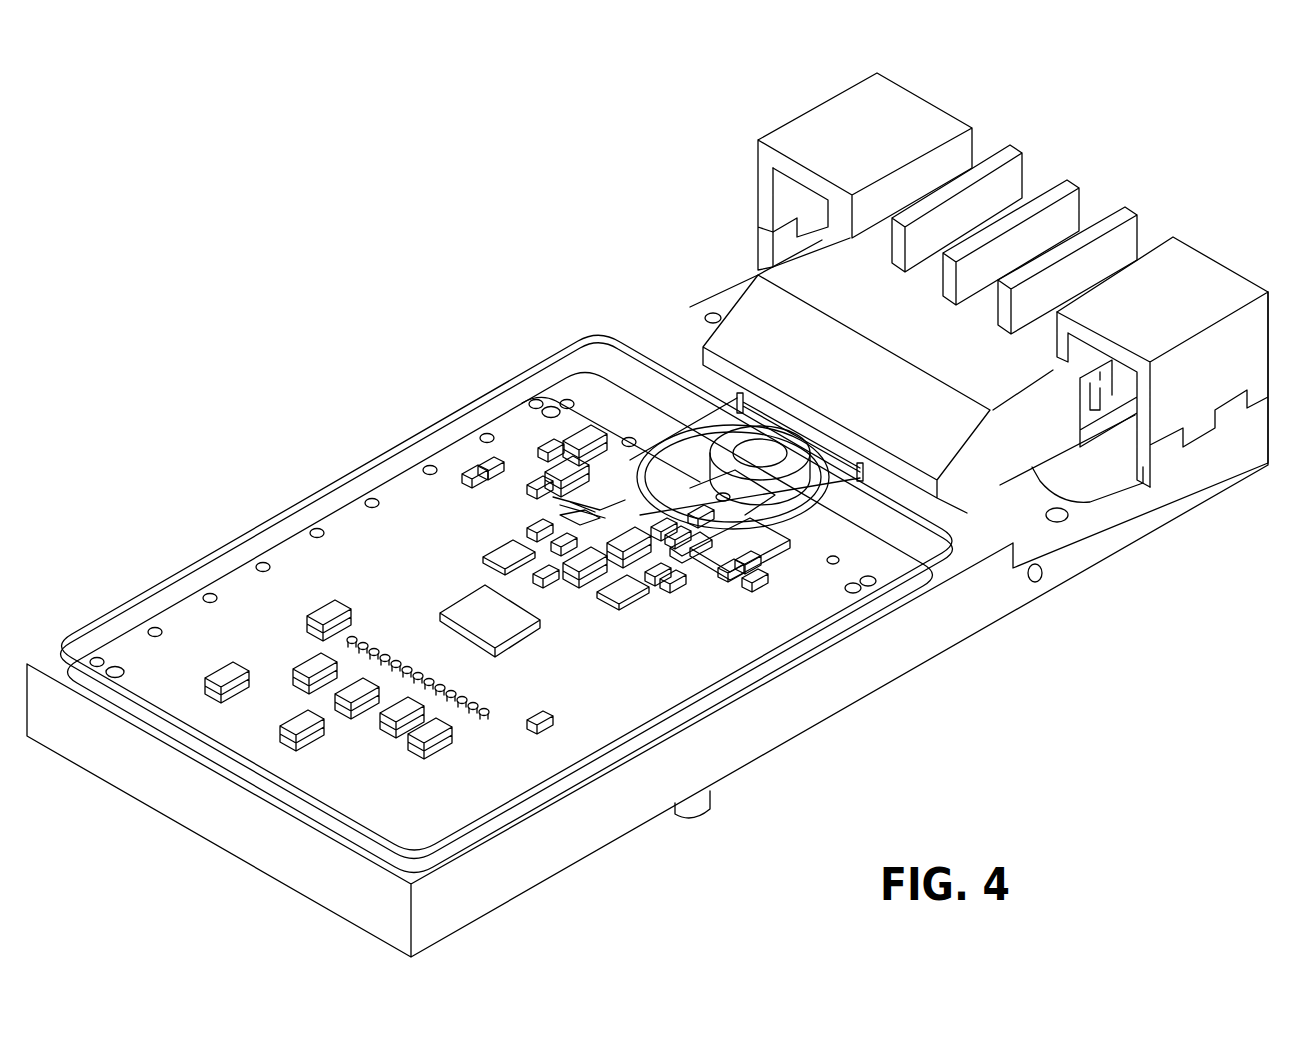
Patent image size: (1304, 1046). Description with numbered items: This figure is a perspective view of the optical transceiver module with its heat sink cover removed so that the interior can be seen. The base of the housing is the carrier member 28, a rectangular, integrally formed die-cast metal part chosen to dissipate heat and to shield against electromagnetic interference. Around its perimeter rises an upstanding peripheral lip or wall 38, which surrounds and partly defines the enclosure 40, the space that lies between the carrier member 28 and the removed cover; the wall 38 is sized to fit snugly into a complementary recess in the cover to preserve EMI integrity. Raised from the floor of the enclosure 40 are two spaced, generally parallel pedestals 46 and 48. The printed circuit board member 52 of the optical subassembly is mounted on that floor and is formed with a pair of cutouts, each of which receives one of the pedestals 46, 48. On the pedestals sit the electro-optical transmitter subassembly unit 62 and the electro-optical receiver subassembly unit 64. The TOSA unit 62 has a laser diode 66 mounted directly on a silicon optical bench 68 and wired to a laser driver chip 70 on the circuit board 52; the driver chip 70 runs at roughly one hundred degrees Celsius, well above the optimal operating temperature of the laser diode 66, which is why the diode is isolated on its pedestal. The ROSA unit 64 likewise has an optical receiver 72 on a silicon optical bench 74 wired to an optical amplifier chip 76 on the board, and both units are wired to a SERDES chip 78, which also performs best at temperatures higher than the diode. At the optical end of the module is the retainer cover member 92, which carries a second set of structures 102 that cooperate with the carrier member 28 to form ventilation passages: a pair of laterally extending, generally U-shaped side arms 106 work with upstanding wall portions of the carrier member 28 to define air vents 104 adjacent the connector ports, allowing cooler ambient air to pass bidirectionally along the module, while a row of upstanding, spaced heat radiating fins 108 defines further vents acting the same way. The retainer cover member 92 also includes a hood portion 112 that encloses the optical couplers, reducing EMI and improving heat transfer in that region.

The carrier member 28 is at (850, 697).
The peripheral lip or wall 38 is at (550, 350).
The enclosure 40 is at (910, 553).
The pedestal 46 is at (667, 490).
The pedestal 48 is at (780, 520).
The printed circuit board member 52 is at (425, 552).
The electro-optical transmitter subassembly (TOSA) unit 62 is at (553, 497).
The electro-optical receiver subassembly (ROSA) unit 64 is at (732, 588).
The laser diode 66 is at (560, 518).
The silicon optical bench 68 is at (607, 493).
The laser driver chip 70 is at (503, 548).
The optical receiver 72 is at (688, 560).
The silicon optical bench 74 is at (773, 537).
The optical amplifier chip 76 is at (628, 605).
The SERDES chip 78 is at (503, 633).
The retainer cover member 92 is at (812, 93).
The second set of structures 102 is at (988, 128).
The air vents 104 is at (790, 188).
The U-shaped side arms 106 is at (912, 100).
The heat radiating fins 108 is at (1078, 182).
The hood portion 112 is at (900, 310).